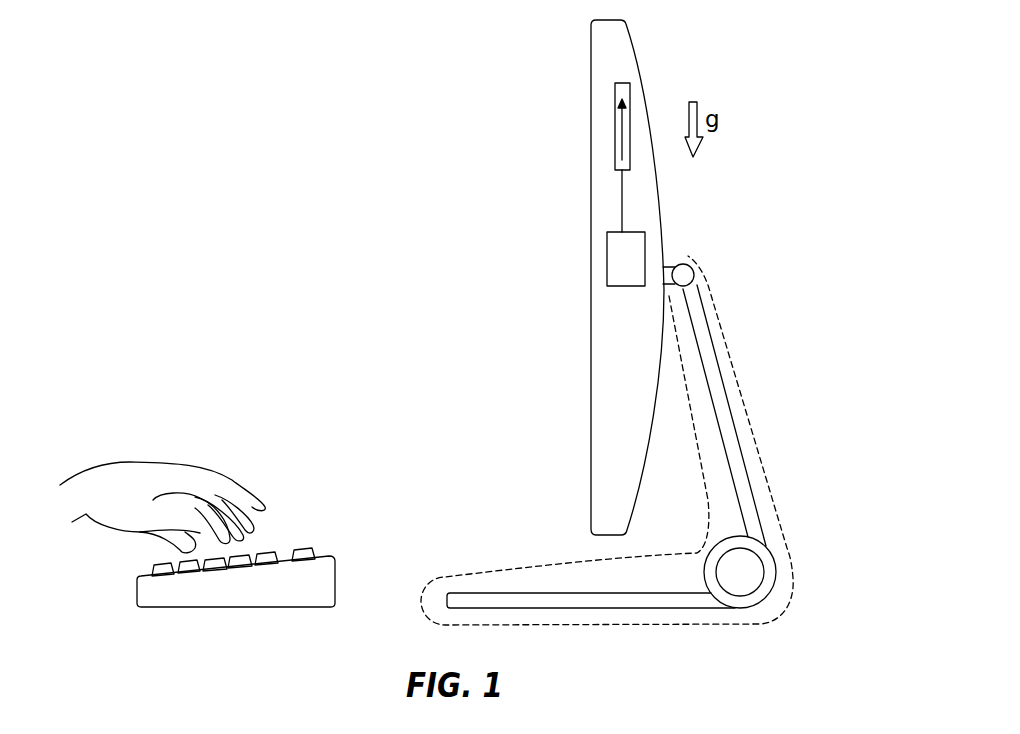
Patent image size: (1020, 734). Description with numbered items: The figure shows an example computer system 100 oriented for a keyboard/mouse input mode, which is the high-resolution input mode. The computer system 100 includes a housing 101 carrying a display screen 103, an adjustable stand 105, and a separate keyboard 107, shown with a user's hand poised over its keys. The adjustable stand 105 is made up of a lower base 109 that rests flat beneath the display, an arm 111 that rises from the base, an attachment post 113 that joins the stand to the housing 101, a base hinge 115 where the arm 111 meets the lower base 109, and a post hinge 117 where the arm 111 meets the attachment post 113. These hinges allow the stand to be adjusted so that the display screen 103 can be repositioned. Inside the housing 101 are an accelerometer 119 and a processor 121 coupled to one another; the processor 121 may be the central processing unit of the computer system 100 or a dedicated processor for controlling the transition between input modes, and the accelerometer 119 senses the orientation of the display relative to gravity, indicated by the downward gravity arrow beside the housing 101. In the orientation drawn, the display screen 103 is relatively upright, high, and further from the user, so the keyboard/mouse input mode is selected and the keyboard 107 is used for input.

The computer system 100 is at (372, 212).
The housing 101 is at (638, 62).
The display screen 103 is at (590, 196).
The adjustable stand 105 is at (757, 445).
The keyboard 107 is at (260, 607).
The lower base 109 is at (673, 609).
The arm 111 is at (733, 413).
The attachment post 113 is at (668, 260).
The base hinge 115 is at (753, 569).
The post hinge 117 is at (695, 270).
The accelerometer 119 is at (615, 156).
The processor 121 is at (646, 242).